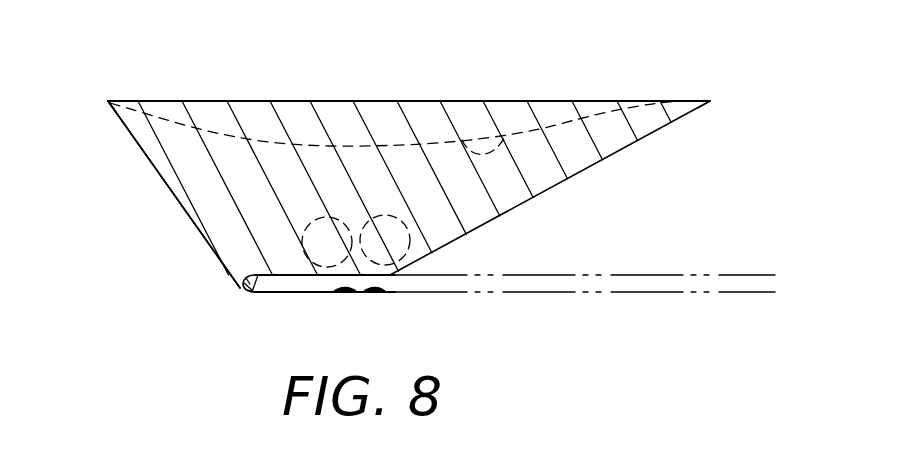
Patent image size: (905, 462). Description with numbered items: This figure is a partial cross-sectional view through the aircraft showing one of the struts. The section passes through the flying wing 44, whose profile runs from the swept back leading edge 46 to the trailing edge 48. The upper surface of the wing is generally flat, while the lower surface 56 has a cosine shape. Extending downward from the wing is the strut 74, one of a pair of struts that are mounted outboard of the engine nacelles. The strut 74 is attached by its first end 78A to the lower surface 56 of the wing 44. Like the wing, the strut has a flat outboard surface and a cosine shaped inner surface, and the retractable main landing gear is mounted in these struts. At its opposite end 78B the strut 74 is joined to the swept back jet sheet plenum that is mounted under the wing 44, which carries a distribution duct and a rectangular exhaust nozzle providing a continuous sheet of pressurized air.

The flying wing 44 is at (228, 101).
The swept back leading edge 46 is at (108, 101).
The trailing edge 48 is at (710, 101).
The lower surface 56 is at (503, 145).
The strut 74 is at (178, 202).
The first end 78A is at (109, 103).
The end 78B is at (240, 288).